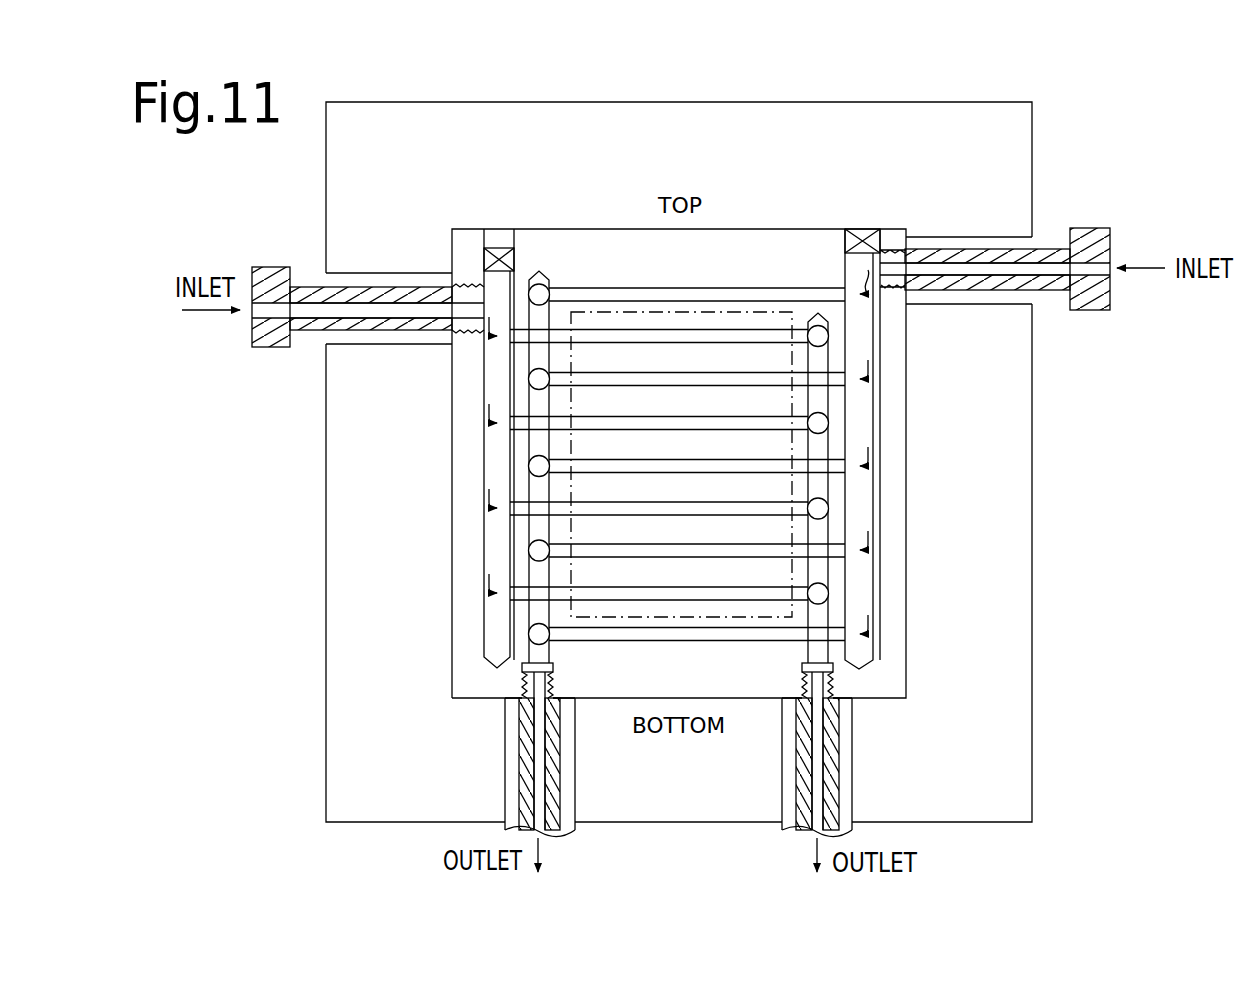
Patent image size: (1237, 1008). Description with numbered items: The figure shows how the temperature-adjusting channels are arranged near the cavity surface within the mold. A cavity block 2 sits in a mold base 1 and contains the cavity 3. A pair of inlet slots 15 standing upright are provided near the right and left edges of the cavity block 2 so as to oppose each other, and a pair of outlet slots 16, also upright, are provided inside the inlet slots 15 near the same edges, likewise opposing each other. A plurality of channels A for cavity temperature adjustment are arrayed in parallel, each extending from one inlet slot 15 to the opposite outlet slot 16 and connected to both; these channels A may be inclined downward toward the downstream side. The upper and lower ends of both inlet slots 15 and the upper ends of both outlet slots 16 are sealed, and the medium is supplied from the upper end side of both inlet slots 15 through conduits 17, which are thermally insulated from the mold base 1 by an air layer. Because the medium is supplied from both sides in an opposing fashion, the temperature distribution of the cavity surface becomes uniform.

The mold base 1 is at (1015, 207).
The cavity block 2 is at (890, 497).
The cavity 3 is at (780, 447).
The inlet slot 15 is at (490, 365).
The outlet slot 16 is at (537, 612).
The conduit 17 is at (270, 267).
The channel for cavity temperature adjustment A is at (767, 293).